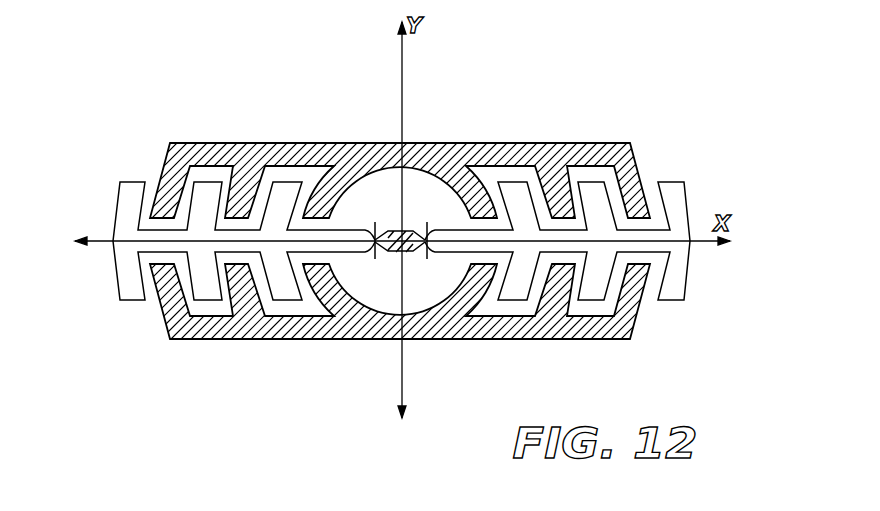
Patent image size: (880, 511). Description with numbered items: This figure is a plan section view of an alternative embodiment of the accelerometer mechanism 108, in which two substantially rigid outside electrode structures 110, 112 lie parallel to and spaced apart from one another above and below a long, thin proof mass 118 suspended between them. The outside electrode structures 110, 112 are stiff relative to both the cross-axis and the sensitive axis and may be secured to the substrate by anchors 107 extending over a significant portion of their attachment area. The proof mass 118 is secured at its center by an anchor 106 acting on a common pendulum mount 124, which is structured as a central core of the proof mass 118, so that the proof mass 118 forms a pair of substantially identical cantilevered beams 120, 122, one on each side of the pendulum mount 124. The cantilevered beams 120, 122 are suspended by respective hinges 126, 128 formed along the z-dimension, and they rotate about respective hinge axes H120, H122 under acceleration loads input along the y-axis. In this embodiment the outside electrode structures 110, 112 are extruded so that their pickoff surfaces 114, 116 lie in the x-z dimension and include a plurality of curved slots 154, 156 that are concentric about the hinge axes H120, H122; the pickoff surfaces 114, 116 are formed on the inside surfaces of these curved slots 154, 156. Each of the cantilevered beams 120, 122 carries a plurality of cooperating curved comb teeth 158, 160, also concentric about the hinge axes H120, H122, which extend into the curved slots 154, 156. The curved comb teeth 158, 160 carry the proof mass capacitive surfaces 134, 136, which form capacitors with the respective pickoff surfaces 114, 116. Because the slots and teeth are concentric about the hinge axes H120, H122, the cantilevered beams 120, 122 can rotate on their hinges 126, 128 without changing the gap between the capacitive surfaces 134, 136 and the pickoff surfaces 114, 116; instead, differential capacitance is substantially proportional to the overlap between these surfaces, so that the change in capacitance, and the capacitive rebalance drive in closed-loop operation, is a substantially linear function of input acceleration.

The anchor 106 is at (390, 252).
The anchors 107 is at (448, 155).
The accelerometer mechanism 108 is at (745, 180).
The first outside electrode structure 110 is at (530, 143).
The second outside electrode structure 112 is at (532, 340).
The first pickoff surface 114 is at (628, 186).
The second pickoff surface 116 is at (617, 298).
The proof mass 118 is at (710, 268).
The first cantilevered beam 120 is at (690, 244).
The second cantilevered beam 122 is at (113, 250).
The pendulum mount 124 is at (389, 205).
The hinge 126 is at (432, 262).
The hinge 128 is at (373, 246).
The first capacitive surface 134 is at (625, 200).
The second capacitive surface 136 is at (613, 270).
The curved slots 154 is at (577, 308).
The curved slots 156 is at (232, 307).
The curved comb teeth 158 is at (593, 292).
The curved comb teeth 160 is at (208, 290).
The hinge axis H120 is at (437, 225).
The hinge axis H122 is at (362, 225).